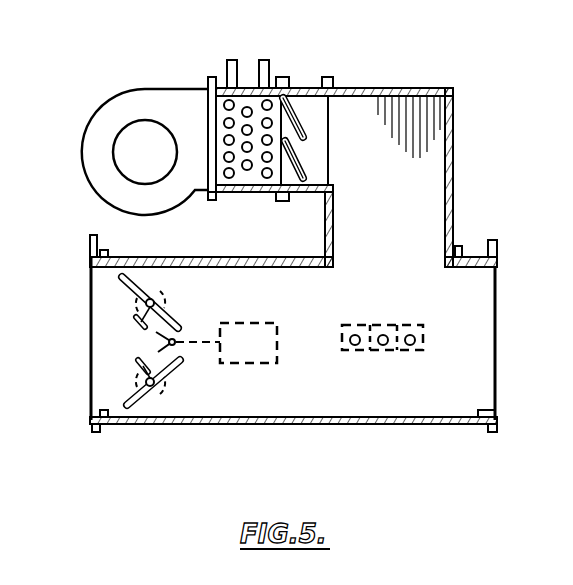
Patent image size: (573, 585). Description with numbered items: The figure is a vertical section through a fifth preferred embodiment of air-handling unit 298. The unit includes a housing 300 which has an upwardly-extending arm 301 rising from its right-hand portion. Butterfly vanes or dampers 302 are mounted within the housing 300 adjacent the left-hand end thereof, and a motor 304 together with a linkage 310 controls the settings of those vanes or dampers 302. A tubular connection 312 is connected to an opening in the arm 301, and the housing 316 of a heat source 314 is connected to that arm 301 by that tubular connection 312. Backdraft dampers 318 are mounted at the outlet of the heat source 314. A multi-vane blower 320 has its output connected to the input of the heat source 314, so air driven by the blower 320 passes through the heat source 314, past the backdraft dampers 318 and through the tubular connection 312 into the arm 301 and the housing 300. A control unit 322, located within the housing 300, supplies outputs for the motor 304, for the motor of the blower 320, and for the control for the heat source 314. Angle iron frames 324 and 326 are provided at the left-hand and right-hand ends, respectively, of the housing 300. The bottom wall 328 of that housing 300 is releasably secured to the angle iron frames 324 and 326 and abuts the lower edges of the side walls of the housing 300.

The air-handling unit 298 is at (463, 147).
The housing 300 is at (162, 428).
The upwardly-extending arm 301 is at (428, 88).
The butterfly vanes or dampers 302 is at (121, 278).
The motor 304 is at (275, 300).
The linkage 310 is at (136, 324).
The tubular connection 312 is at (304, 86).
The heat source 314 is at (245, 92).
The housing of heat source 316 is at (241, 194).
The backdraft dampers 318 is at (305, 178).
The multi-vane blower 320 is at (88, 128).
The control unit 322 is at (388, 324).
The angle iron frame 324 is at (91, 240).
The angle iron frame 326 is at (497, 246).
The bottom wall 328 is at (295, 424).